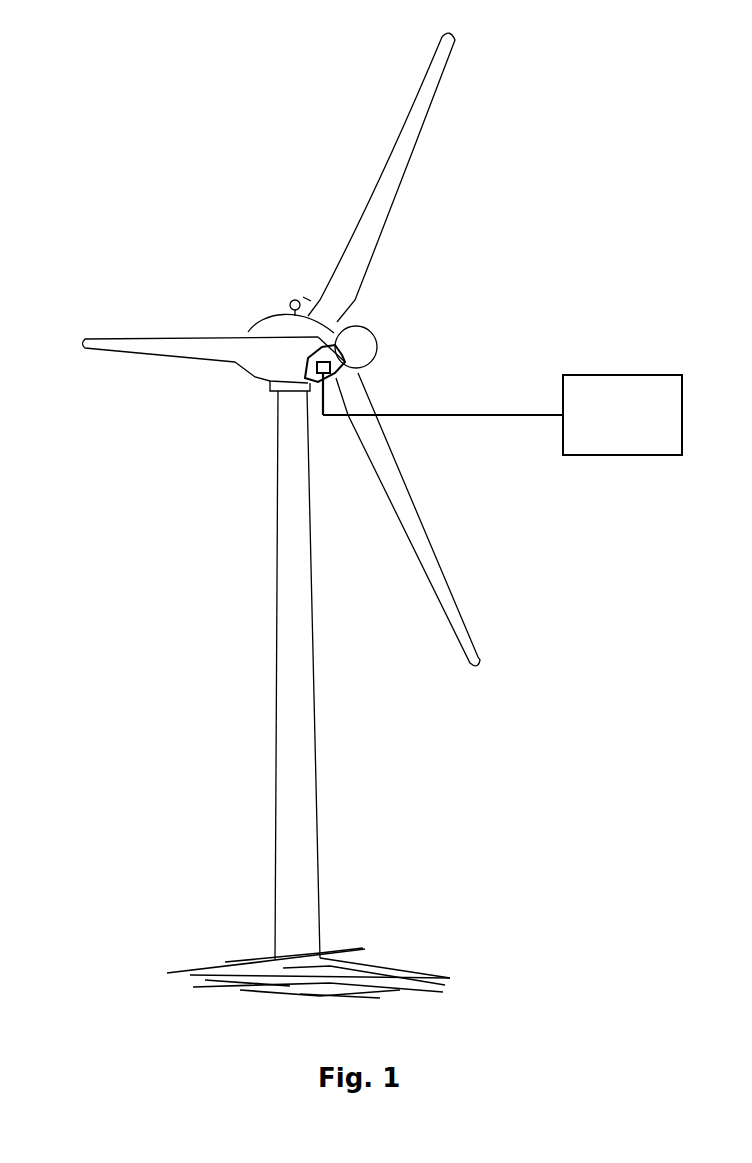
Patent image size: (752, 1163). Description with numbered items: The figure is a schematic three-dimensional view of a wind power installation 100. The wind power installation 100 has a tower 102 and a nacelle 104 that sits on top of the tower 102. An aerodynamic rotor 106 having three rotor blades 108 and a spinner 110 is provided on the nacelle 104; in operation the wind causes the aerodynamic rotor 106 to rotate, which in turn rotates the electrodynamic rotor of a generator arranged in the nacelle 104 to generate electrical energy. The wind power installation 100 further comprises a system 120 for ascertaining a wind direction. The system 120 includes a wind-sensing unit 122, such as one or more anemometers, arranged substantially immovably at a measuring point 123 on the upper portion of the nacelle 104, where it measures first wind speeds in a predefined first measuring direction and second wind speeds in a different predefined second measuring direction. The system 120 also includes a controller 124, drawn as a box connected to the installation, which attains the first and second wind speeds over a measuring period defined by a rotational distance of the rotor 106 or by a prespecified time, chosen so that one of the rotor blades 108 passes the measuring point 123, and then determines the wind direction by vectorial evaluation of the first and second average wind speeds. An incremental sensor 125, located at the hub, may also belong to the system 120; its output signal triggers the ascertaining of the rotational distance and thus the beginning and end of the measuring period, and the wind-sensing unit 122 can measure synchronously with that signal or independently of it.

The wind power installation 100 is at (241, 446).
The tower 102 is at (300, 766).
The nacelle 104 is at (288, 318).
The aerodynamic rotor 106 is at (480, 248).
The rotor blades 108 is at (408, 140).
The spinner 110 is at (367, 336).
The system for ascertaining a wind direction 120 is at (307, 294).
The wind-sensing unit 122 is at (297, 299).
The measuring point 123 is at (295, 308).
The controller 124 is at (502, 415).
The incremental sensor 125 is at (335, 345).